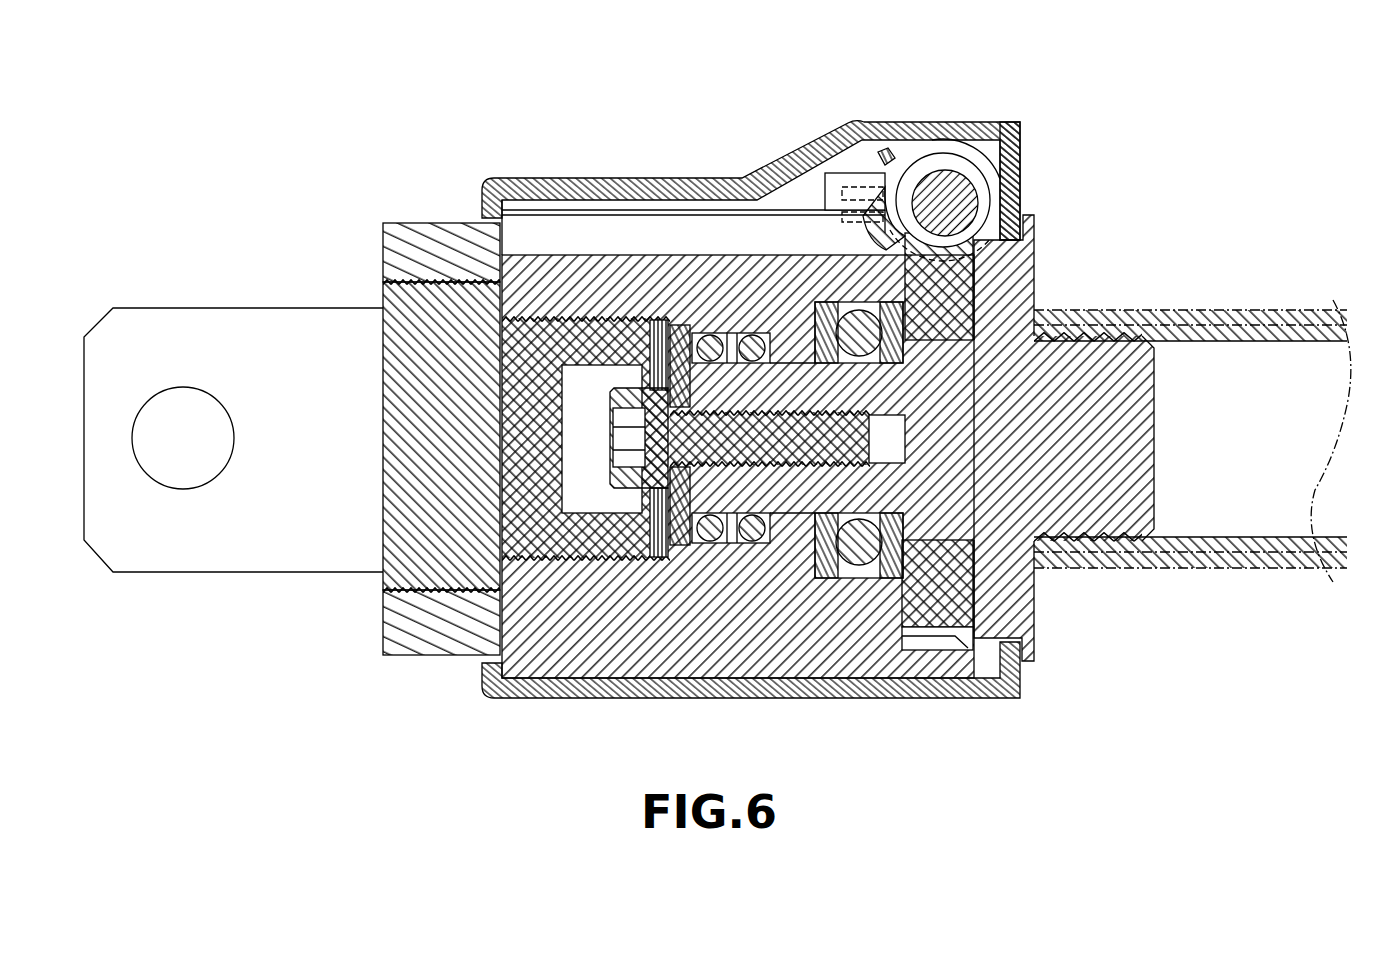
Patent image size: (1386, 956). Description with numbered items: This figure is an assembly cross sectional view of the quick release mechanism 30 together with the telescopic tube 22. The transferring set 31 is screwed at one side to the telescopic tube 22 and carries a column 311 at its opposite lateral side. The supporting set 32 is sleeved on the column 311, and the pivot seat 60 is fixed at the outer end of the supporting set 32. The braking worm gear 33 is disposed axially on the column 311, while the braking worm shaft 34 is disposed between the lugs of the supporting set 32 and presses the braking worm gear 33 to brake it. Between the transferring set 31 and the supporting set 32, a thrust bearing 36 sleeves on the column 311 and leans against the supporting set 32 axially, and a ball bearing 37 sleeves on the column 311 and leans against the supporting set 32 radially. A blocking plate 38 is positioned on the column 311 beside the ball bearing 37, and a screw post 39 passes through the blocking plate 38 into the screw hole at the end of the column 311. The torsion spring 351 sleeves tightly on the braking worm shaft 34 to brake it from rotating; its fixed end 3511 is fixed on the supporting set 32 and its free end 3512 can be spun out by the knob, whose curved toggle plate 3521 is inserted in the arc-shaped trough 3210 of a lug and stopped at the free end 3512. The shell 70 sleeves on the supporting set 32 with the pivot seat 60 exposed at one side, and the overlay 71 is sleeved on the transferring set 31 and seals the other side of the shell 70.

The telescopic tube 22 is at (1233, 312).
The quick release mechanism 30 is at (745, 397).
The transferring set 31 is at (1092, 495).
The column 311 is at (753, 353).
The supporting set 32 is at (673, 285).
The trough 3210 is at (878, 160).
The braking worm gear 33 is at (962, 279).
The braking worm shaft 34 is at (958, 198).
The torsion spring 351 is at (940, 163).
The fixed end 3511 is at (855, 215).
The free end 3512 is at (828, 205).
The toggle plate 3521 is at (1025, 240).
The thrust bearing 36 is at (862, 585).
The ball bearing 37 is at (752, 542).
The blocking plate 38 is at (684, 545).
The screw post 39 is at (640, 480).
The pivot seat 60 is at (245, 306).
The shell 70 is at (811, 403).
The overlay 71 is at (1013, 160).